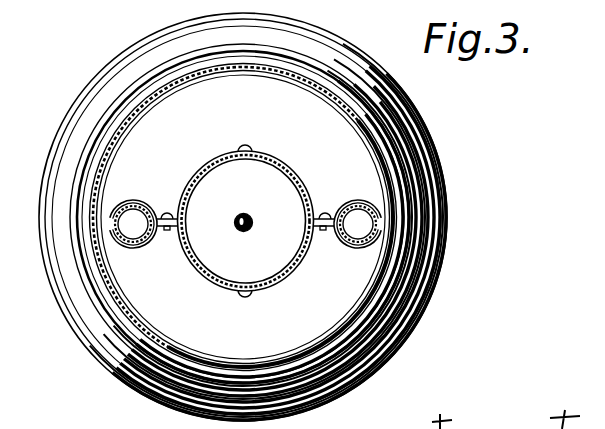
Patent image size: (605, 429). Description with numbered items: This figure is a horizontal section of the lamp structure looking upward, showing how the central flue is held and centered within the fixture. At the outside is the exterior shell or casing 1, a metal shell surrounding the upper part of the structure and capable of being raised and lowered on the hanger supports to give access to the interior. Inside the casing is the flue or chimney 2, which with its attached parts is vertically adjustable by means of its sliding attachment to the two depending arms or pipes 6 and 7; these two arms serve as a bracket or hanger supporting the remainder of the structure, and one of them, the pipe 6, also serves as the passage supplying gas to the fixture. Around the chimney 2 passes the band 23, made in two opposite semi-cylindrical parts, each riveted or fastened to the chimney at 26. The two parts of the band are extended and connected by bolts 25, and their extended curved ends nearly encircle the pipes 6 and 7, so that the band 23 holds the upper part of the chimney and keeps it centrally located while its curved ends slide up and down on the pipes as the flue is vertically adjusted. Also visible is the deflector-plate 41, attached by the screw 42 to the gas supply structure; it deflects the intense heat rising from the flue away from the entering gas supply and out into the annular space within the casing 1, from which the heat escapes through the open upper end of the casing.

The exterior shell or casing 1 is at (122, 55).
The deflector-plate 41 is at (360, 147).
The flue or chimney 2 is at (294, 172).
The rivet fastening 26 is at (246, 144).
The bolts 25 is at (167, 212).
The depending arm or pipe 6 is at (134, 201).
The depending arm or pipe 7 is at (342, 240).
The band 23 is at (142, 249).
The screw 42 is at (244, 214).